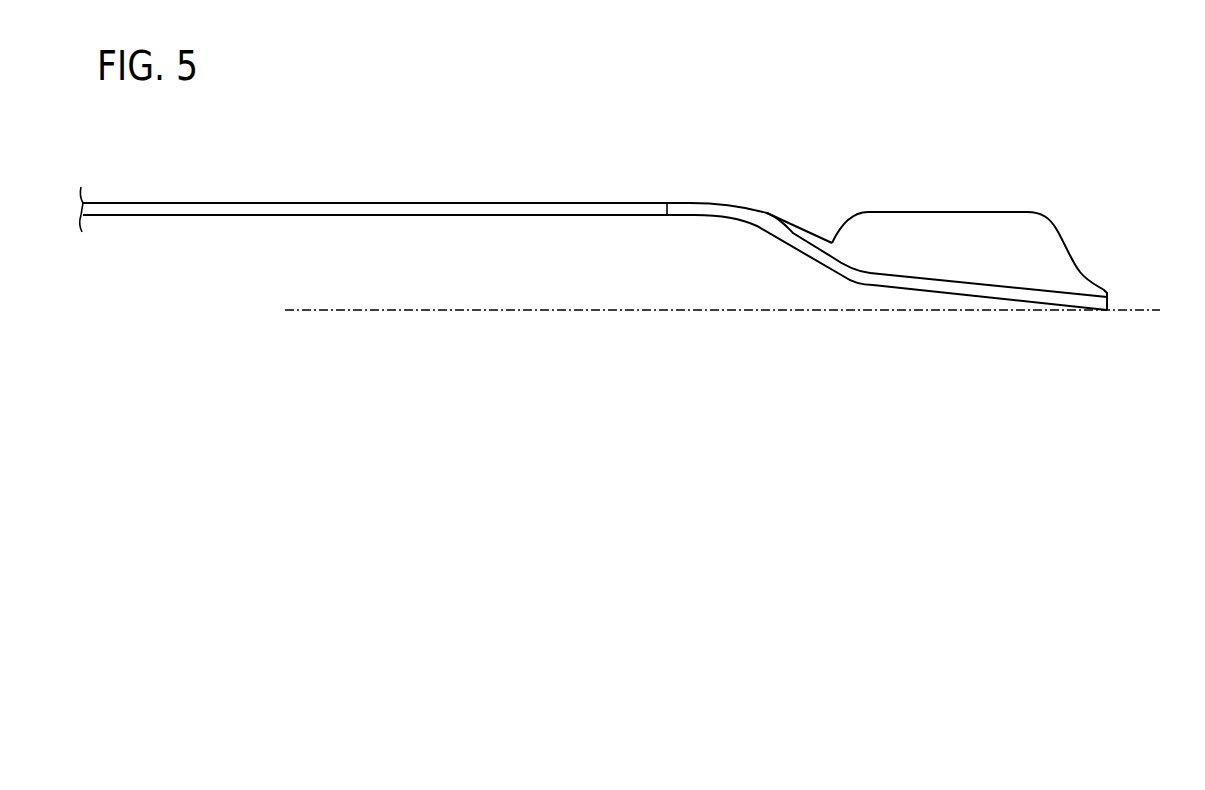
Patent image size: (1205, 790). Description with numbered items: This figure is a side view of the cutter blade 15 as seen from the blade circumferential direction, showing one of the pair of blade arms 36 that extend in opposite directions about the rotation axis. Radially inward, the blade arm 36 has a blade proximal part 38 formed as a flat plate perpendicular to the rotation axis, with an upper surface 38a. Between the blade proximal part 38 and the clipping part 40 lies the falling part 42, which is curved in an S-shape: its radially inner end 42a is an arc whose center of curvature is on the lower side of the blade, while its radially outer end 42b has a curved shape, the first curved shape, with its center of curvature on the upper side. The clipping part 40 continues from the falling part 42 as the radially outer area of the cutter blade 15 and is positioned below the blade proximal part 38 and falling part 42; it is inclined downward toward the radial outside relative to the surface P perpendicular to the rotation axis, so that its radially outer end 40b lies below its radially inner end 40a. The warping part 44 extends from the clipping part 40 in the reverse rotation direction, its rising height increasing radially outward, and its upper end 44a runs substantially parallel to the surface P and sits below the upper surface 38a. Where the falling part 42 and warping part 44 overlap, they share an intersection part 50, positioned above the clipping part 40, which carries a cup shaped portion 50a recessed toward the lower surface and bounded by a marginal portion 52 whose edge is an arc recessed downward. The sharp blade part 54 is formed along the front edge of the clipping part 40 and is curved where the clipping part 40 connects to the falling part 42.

The cutter blade 15 is at (352, 109).
The blade arm 36 is at (640, 186).
The blade proximal part 38 is at (373, 180).
The upper surface of the blade proximal part 38a is at (569, 203).
The clipping part 40 is at (993, 301).
The radially inner end of the clipping part 40a is at (878, 283).
The radially outer end of the clipping part 40b is at (1096, 303).
The falling part 42 is at (770, 261).
The radially inner end of the falling part 42a is at (758, 213).
The radially outer end of the falling part 42b is at (855, 280).
The warping part 44 is at (987, 225).
The upper end of the warping part 44a is at (945, 212).
The intersection part 50 is at (824, 200).
The cup shaped portion 50a is at (831, 241).
The marginal portion 52 is at (820, 242).
The blade part 54 is at (1022, 295).
The surface perpendicular to the blade rotation axis P is at (515, 310).